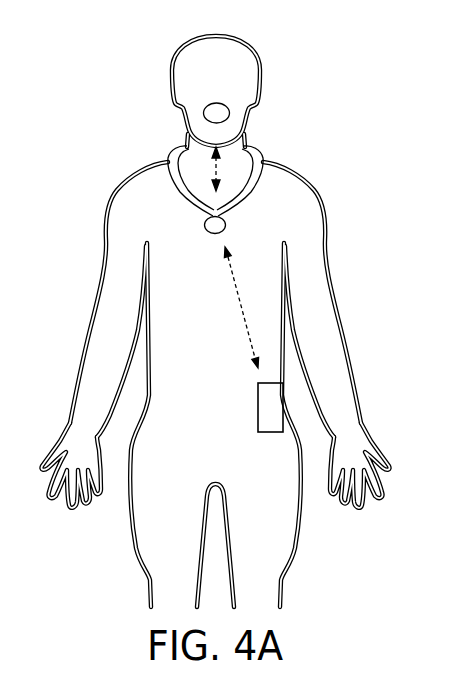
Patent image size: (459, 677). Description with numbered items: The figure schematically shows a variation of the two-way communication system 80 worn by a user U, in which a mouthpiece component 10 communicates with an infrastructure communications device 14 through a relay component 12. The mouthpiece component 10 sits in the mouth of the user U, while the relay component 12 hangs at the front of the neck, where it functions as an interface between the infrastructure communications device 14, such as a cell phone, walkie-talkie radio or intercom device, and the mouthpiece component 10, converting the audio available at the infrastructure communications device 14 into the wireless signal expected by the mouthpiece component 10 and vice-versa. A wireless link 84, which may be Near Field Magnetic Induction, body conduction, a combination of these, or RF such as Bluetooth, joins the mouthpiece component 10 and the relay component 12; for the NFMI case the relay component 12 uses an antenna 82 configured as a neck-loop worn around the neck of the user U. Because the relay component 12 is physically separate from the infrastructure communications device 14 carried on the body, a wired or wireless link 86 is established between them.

The communication system 80 is at (97, 60).
The user U is at (172, 67).
The mouthpiece component 10 is at (218, 113).
The relay component 12 is at (224, 223).
The infrastructure communications device 14 is at (283, 414).
The antenna 82 is at (259, 183).
The wireless link 84 is at (214, 173).
The link 86 is at (232, 288).